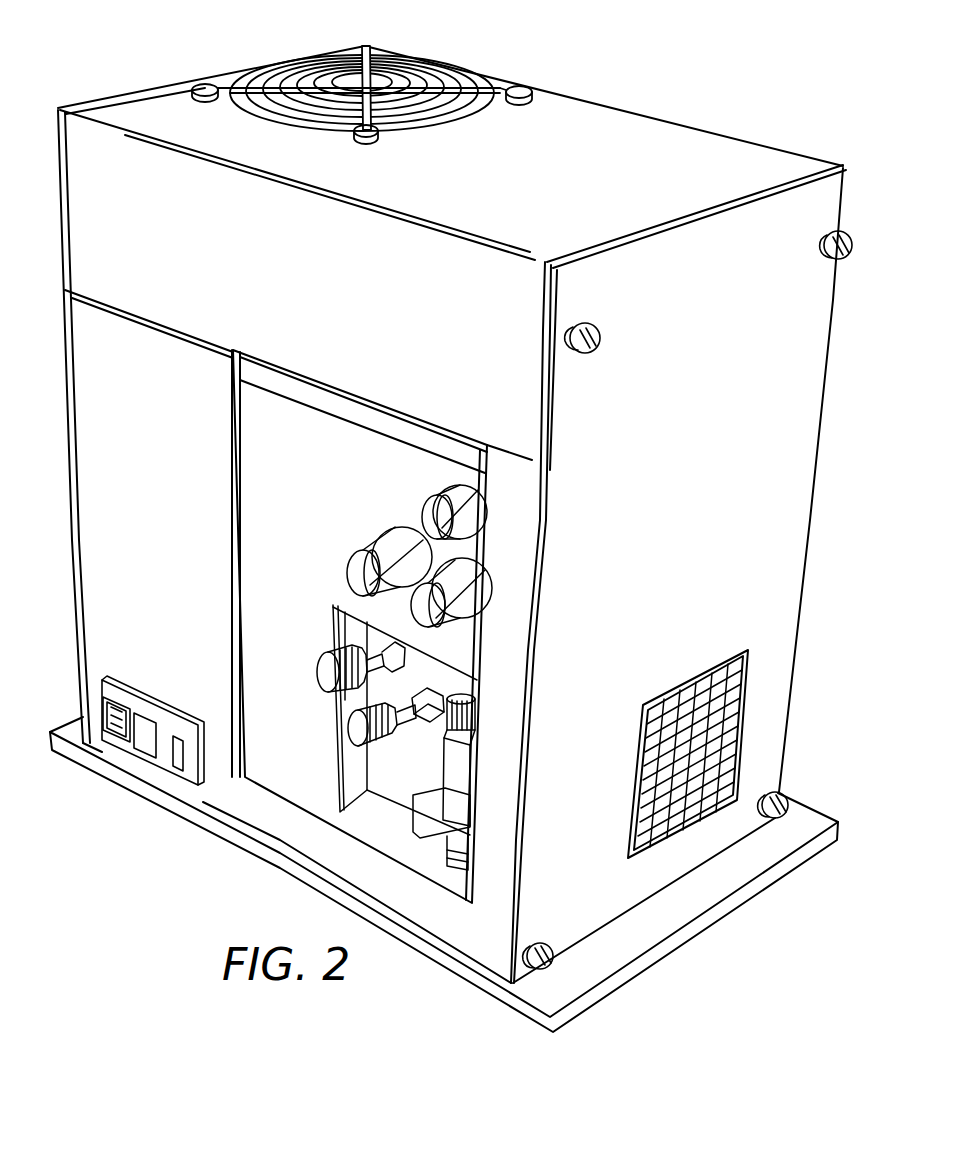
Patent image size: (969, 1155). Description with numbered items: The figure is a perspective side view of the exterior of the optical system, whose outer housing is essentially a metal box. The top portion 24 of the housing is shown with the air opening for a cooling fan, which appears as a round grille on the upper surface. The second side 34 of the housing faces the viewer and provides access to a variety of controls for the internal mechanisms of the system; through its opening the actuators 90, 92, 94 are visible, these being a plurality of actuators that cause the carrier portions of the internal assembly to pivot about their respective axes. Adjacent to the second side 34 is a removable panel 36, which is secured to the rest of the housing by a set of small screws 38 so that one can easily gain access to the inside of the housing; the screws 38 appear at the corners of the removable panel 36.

The top portion 24 is at (583, 142).
The second side 34 is at (130, 512).
The removable panel 36 is at (750, 470).
The small screws 38 is at (598, 348).
The actuator 90 is at (446, 732).
The actuator 92 is at (356, 734).
The actuator 94 is at (325, 688).